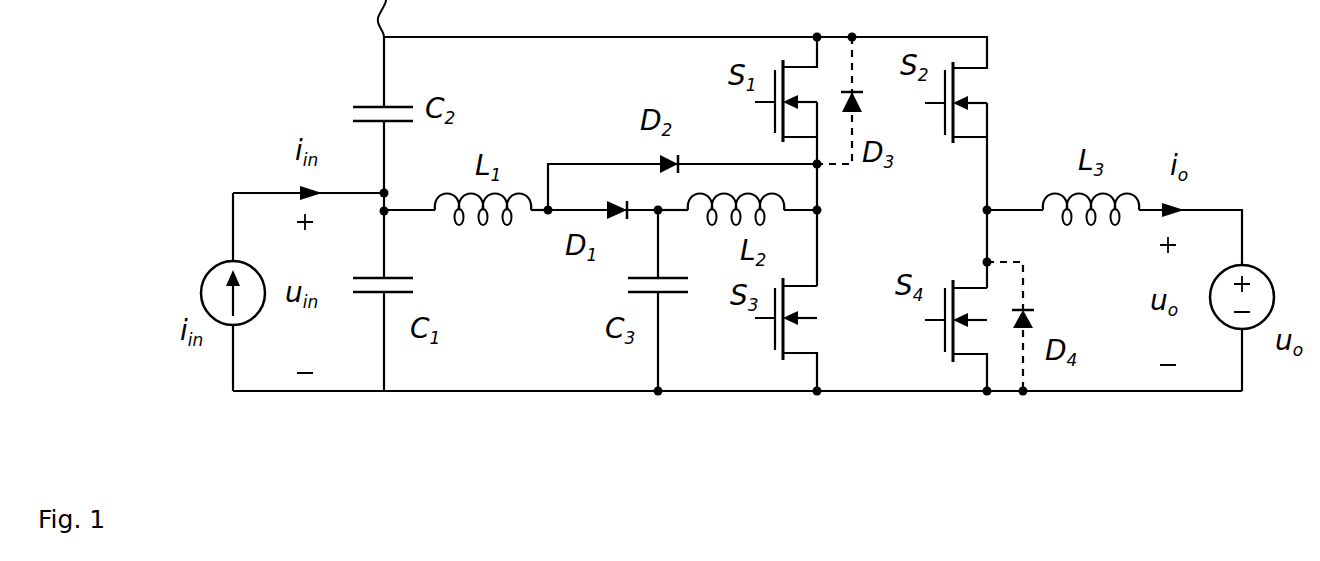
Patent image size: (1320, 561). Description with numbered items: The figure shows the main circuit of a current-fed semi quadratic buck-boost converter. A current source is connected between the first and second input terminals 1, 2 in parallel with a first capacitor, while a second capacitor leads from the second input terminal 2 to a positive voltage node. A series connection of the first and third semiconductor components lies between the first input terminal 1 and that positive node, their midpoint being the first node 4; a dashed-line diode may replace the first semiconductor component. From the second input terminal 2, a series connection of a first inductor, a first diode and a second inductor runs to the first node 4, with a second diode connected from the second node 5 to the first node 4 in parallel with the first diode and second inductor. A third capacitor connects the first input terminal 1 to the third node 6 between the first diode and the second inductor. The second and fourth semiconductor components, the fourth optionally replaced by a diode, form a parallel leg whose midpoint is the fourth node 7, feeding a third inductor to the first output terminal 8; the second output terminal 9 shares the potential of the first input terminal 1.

The first input terminal 1 is at (384, 395).
The second input terminal 2 is at (390, 195).
The first node 4 is at (822, 213).
The second node 5 is at (545, 215).
The third node 6 is at (662, 213).
The fourth node 7 is at (983, 210).
The first output terminal 8 is at (1195, 208).
The second output terminal 9 is at (1188, 395).